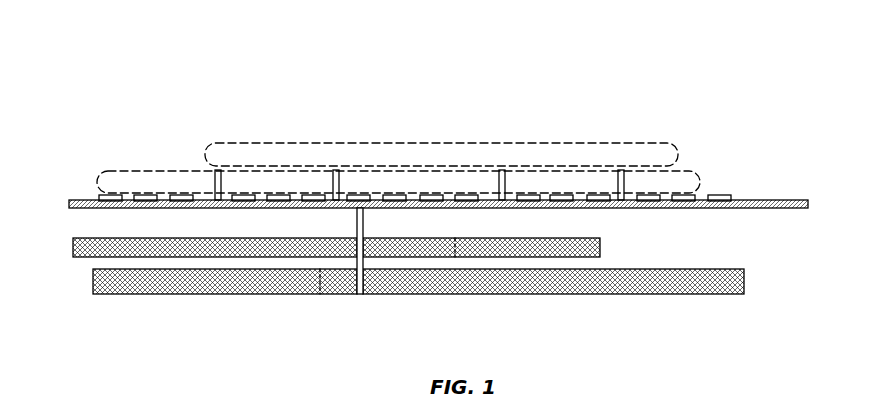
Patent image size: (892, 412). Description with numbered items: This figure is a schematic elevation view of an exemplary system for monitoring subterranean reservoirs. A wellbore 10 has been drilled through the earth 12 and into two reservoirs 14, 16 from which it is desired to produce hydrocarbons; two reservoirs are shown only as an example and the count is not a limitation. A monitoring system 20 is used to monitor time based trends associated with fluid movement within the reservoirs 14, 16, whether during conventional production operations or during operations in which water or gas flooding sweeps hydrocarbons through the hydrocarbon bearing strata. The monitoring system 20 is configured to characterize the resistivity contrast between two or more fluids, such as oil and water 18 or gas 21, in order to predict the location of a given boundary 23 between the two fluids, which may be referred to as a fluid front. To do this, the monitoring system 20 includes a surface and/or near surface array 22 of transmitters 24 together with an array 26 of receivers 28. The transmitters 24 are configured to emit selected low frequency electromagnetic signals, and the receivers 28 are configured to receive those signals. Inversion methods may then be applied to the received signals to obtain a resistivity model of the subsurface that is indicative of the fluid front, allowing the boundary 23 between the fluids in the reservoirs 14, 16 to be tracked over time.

The wellbore 10 is at (369, 193).
The earth 12 is at (414, 358).
The reservoir 14 is at (161, 238).
The reservoir 16 is at (525, 294).
The water 18 is at (178, 294).
The monitoring system 20 is at (504, 77).
The gas 21 is at (583, 238).
The array of transmitters 22 is at (672, 144).
The boundary 23 is at (455, 244).
The transmitter 24 is at (218, 170).
The array of receivers 26 is at (707, 172).
The receiver 28 is at (113, 196).